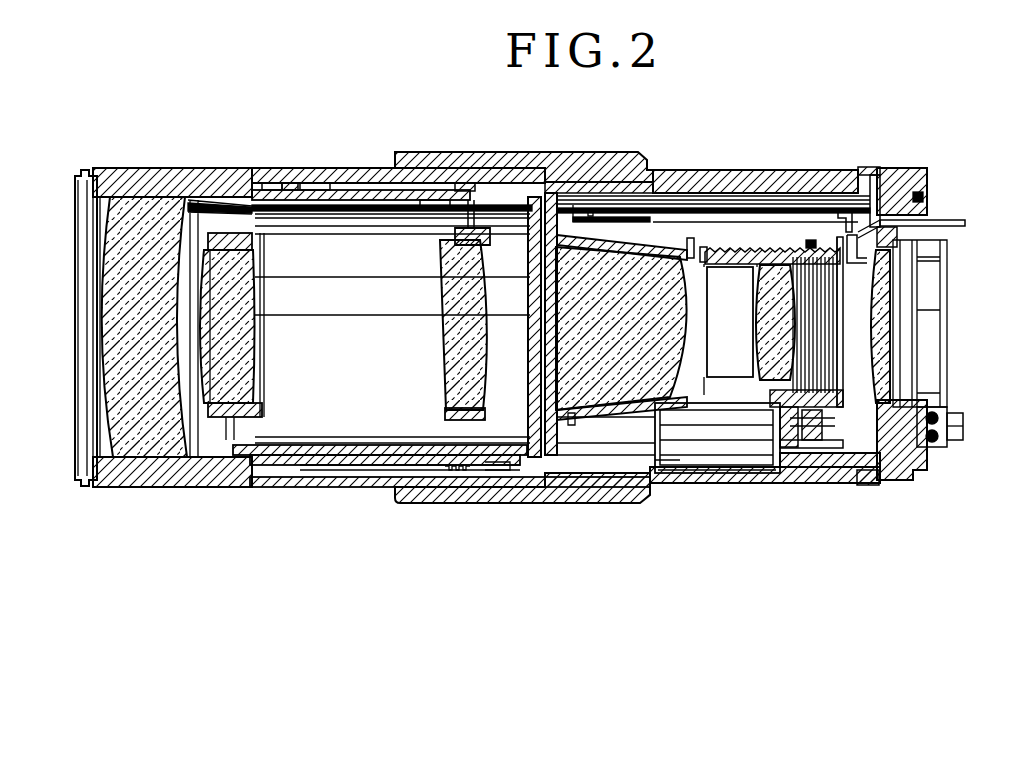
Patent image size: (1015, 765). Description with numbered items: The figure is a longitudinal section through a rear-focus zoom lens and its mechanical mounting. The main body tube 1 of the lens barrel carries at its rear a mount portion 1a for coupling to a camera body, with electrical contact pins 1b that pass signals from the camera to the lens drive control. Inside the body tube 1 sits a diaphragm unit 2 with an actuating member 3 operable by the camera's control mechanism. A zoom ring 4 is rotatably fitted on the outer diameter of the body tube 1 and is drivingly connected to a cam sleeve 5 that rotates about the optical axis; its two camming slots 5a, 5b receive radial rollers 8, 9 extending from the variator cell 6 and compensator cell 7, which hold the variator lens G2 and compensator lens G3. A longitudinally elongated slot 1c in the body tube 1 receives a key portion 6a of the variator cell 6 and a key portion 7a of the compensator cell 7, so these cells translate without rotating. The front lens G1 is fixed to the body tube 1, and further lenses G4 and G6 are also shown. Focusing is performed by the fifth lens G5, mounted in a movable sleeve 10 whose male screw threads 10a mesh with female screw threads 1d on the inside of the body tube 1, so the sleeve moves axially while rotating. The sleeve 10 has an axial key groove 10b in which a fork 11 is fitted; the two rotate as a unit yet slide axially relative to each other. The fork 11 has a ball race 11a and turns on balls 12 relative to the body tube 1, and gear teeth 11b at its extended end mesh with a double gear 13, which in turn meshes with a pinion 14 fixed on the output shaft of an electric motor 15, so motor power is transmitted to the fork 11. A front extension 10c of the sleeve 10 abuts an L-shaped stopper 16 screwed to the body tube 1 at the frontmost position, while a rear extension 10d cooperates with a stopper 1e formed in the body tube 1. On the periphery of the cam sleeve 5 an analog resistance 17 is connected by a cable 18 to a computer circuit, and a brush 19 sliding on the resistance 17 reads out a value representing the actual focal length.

The body tube 1 is at (772, 192).
The mount portion 1a is at (922, 182).
The electrical contact pins 1b is at (963, 430).
The longitudinally elongated slot 1c is at (343, 208).
The female screw threads 1d is at (752, 262).
The stopper 1e is at (905, 275).
The diaphragm unit 2 is at (538, 190).
The actuating member 3 is at (702, 250).
The zoom ring 4 is at (597, 165).
The cam sleeve 5 is at (372, 192).
The camming slot 5a is at (286, 192).
The camming slot 5b is at (430, 200).
The variator cell 6 is at (233, 240).
The key portion 6a is at (312, 205).
The compensator cell 7 is at (482, 236).
The key portion 7a is at (430, 214).
The roller 8 is at (267, 190).
The roller 9 is at (461, 200).
The movable sleeve 10 is at (700, 436).
The male screw threads 10a is at (810, 244).
The axial key groove 10b is at (735, 442).
The front extension 10c is at (712, 256).
The rear extension 10d is at (870, 268).
The fork 11 is at (816, 412).
The ball race 11a is at (826, 420).
The gear teeth 11b is at (842, 212).
The balls 12 is at (830, 415).
The double gear 13 is at (806, 434).
The pinion 14 is at (800, 442).
The electric motor 15 is at (754, 452).
The L-shaped stopper 16 is at (724, 258).
The resistance 17 is at (391, 472).
The cable 18 is at (500, 472).
The brush 19 is at (468, 472).
The first lens G1 is at (137, 452).
The variator lens G2 is at (232, 442).
The compensator lens G3 is at (440, 350).
The fourth lens group G4 is at (658, 262).
The fifth lens G5 is at (790, 323).
The sixth lens group G6 is at (900, 332).